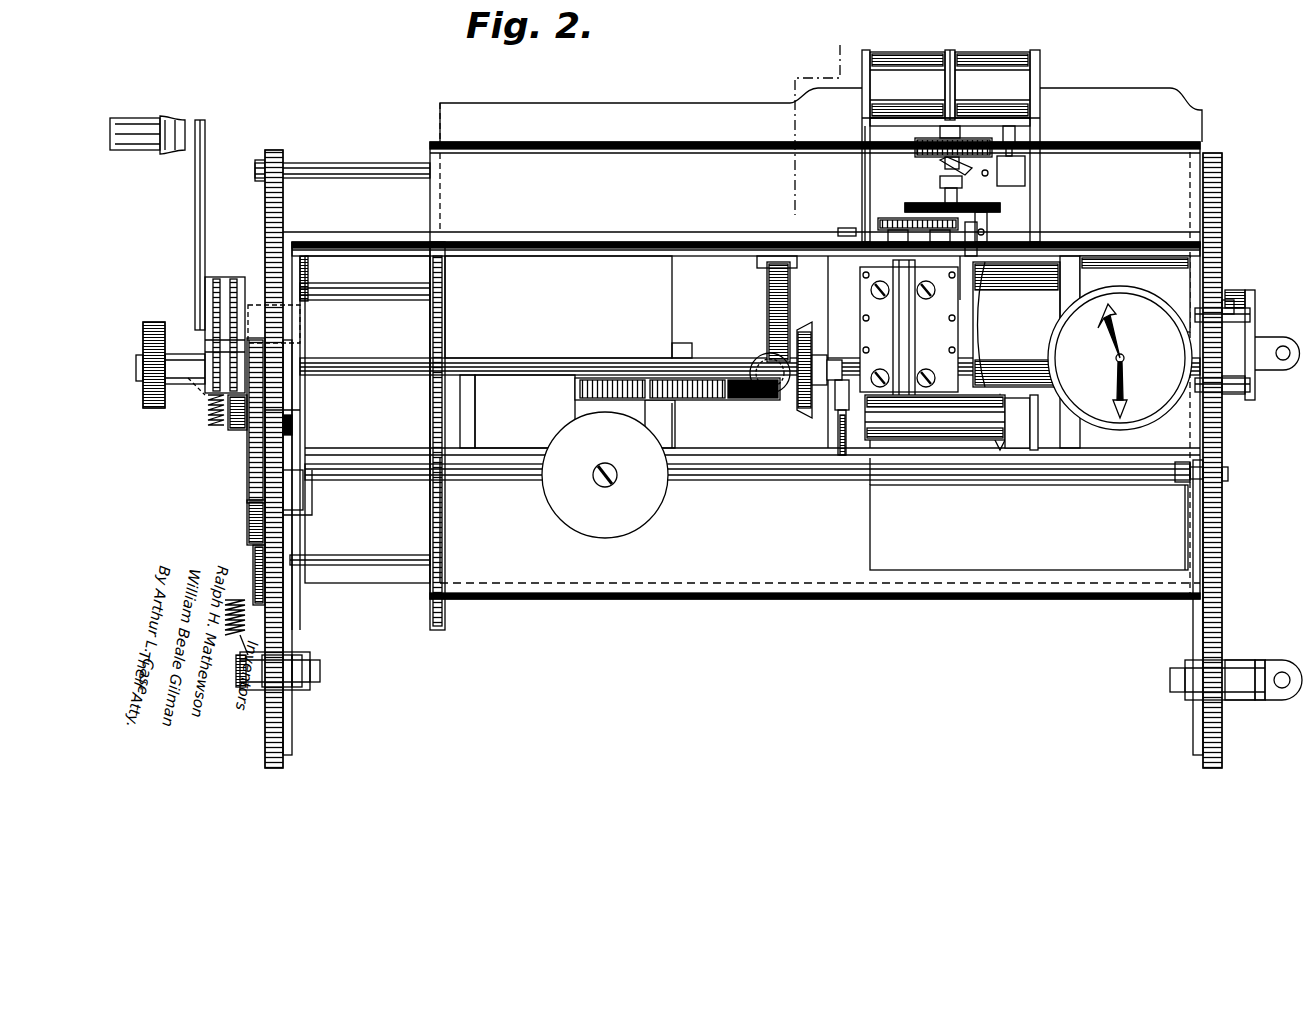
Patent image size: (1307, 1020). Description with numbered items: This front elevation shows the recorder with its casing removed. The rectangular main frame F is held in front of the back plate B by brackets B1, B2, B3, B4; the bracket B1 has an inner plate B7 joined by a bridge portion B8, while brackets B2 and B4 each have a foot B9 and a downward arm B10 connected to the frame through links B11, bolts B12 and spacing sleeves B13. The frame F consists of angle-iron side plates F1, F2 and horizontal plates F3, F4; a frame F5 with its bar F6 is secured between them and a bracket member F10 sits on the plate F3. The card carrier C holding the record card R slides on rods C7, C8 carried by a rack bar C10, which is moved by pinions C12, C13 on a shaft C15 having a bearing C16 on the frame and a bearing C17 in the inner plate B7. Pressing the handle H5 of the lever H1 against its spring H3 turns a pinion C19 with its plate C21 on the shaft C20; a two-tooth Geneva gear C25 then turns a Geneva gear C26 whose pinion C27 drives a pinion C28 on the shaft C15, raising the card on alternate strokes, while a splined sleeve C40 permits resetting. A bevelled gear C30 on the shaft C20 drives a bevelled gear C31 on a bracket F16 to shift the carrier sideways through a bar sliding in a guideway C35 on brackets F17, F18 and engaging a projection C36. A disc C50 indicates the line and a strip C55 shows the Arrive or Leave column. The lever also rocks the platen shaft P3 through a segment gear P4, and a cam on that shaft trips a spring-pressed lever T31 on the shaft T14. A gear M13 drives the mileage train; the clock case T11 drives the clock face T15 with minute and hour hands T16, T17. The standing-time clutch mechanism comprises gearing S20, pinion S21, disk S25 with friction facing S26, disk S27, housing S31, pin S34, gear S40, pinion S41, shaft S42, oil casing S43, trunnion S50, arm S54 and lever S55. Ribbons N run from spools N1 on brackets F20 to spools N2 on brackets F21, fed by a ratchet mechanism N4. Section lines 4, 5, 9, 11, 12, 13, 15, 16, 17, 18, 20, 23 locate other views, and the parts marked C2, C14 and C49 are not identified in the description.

The record card R is at (498, 112).
The card carrier C is at (430, 205).
The frame part C2 is at (1170, 218).
The main frame F is at (495, 245).
The side plate F1 is at (305, 595).
The side plate F2 is at (1200, 522).
The horizontal plate F3 is at (618, 241).
The horizontal plate F4 is at (705, 440).
The frame F5 is at (768, 262).
The bar F6 is at (830, 262).
The bracket member F10 is at (1025, 120).
The bracket F16 is at (765, 300).
The bracket F17 is at (662, 415).
The bracket F18 is at (478, 400).
The bracket F20 is at (860, 168).
The bracket F21 is at (1035, 416).
The horizontal rod C7 is at (388, 170).
The horizontal rod C8 is at (395, 548).
The rack bar C10 is at (280, 605).
The pinion C12 is at (292, 525).
The pinion C13 is at (1222, 483).
The gear wheel C14 is at (1208, 735).
The shaft C15 is at (500, 502).
The bearing C16 is at (1172, 487).
The bearing C17 is at (292, 478).
The pinion C19 is at (272, 342).
The horizontal shaft C20 is at (538, 333).
The plate C21 is at (156, 423).
The Geneva gear C25 is at (330, 373).
The Geneva gear C26 is at (292, 415).
The pinion C27 is at (292, 428).
The pinion C28 is at (220, 532).
The bevelled gear C30 is at (806, 330).
The bevelled gear C31 is at (758, 352).
The guideway C35 is at (688, 333).
The projection C36 is at (446, 296).
The sleeve C40 is at (192, 385).
The knob C49 is at (150, 320).
The circular disc C50 is at (542, 482).
The strip C55 is at (775, 403).
The lever H1 is at (210, 170).
The tension spring H3 is at (203, 405).
The handle H5 is at (183, 115).
The shaft P3 is at (385, 290).
The segment gear P4 is at (225, 278).
The back plate B is at (1258, 322).
The bracket B1 is at (292, 305).
The bracket B2 is at (232, 680).
The bracket B3 is at (1258, 368).
The bracket B4 is at (1270, 665).
The inner plate B7 is at (298, 388).
The bridge portion B8 is at (300, 333).
The foot B9 is at (1277, 350).
The arm B10 is at (285, 700).
The link B11 is at (300, 692).
The bolt B12 is at (318, 672).
The spacing sleeve B13 is at (275, 660).
The printing ribbon N is at (965, 480).
The spool N1 is at (870, 58).
The spool N2 is at (930, 440).
The ratchet mechanism N4 is at (840, 408).
The gear M13 is at (909, 326).
The gearing S20 is at (865, 228).
The pinion S21 is at (965, 262).
The disk S25 is at (1000, 215).
The friction facing S26 is at (1000, 207).
The disk S27 is at (1000, 203).
The housing S31 is at (915, 158).
The pin S34 is at (945, 186).
The gear S40 is at (915, 137).
The pinion S41 is at (1020, 135).
The shaft S42 is at (1020, 148).
The casing S43 is at (1022, 165).
The trunnion S50 is at (940, 168).
The arm S54 is at (1000, 218).
The lever S55 is at (975, 240).
The case T11 is at (1026, 352).
The shaft T14 is at (1142, 308).
The clock face T15 is at (1135, 292).
The minute hand T16 is at (1115, 378).
The hour hand T17 is at (1108, 352).
The spring-pressed lever T31 is at (1228, 305).
The section line 4 is at (905, 490).
The section line 5 is at (952, 490).
The section line 9 is at (905, 0).
The section line 11 is at (240, 510).
The section line 12 is at (858, 45).
The section line 13 is at (780, 122).
The section line 15 is at (606, 340).
The section line 16 is at (852, 480).
The section line 17 is at (840, 480).
The section line 18 is at (185, 172).
The section line 20 is at (258, 690).
The section line 23 is at (186, 315).